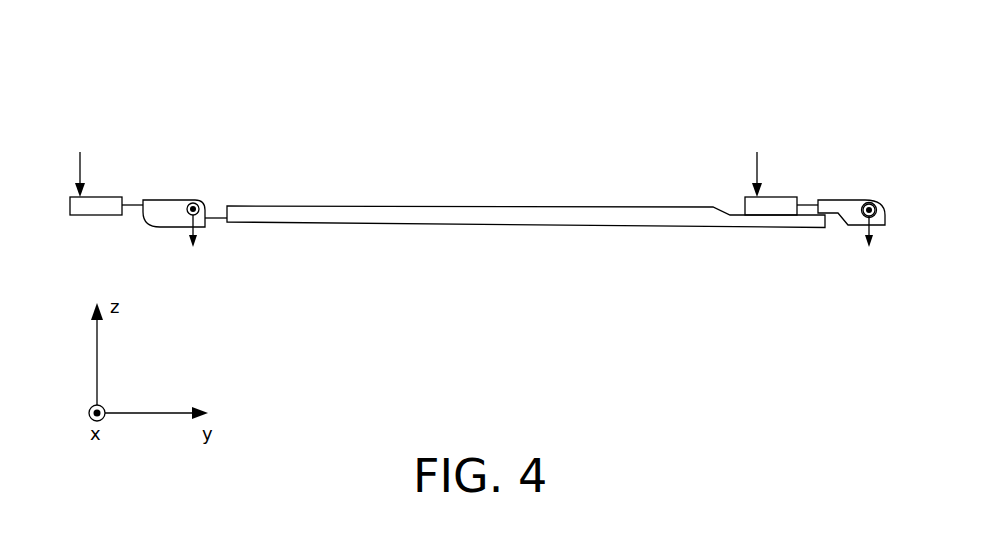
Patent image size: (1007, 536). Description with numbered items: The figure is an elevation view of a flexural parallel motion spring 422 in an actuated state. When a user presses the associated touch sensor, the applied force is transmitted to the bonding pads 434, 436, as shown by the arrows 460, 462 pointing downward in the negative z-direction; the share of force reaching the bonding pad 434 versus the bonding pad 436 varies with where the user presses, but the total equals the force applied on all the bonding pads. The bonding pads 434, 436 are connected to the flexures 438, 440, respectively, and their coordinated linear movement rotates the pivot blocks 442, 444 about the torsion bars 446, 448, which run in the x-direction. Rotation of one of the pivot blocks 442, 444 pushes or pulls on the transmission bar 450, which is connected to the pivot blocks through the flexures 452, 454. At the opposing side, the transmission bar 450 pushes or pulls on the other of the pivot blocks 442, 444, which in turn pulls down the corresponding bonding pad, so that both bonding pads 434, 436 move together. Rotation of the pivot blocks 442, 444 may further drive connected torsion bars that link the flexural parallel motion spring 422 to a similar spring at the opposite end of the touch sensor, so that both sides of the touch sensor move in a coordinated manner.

The flexural parallel motion spring 422 is at (354, 102).
The bonding pad 434 is at (110, 206).
The bonding pad 436 is at (787, 205).
The flexure 438 is at (133, 203).
The flexure 440 is at (808, 202).
The pivot block 442 is at (167, 213).
The pivot block 444 is at (855, 208).
The torsion bar 446 is at (190, 222).
The torsion bar 448 is at (877, 214).
The transmission bar 450 is at (397, 216).
The flexure 452 is at (211, 222).
The flexure 454 is at (832, 228).
The arrow 460 is at (78, 168).
The arrow 462 is at (755, 168).